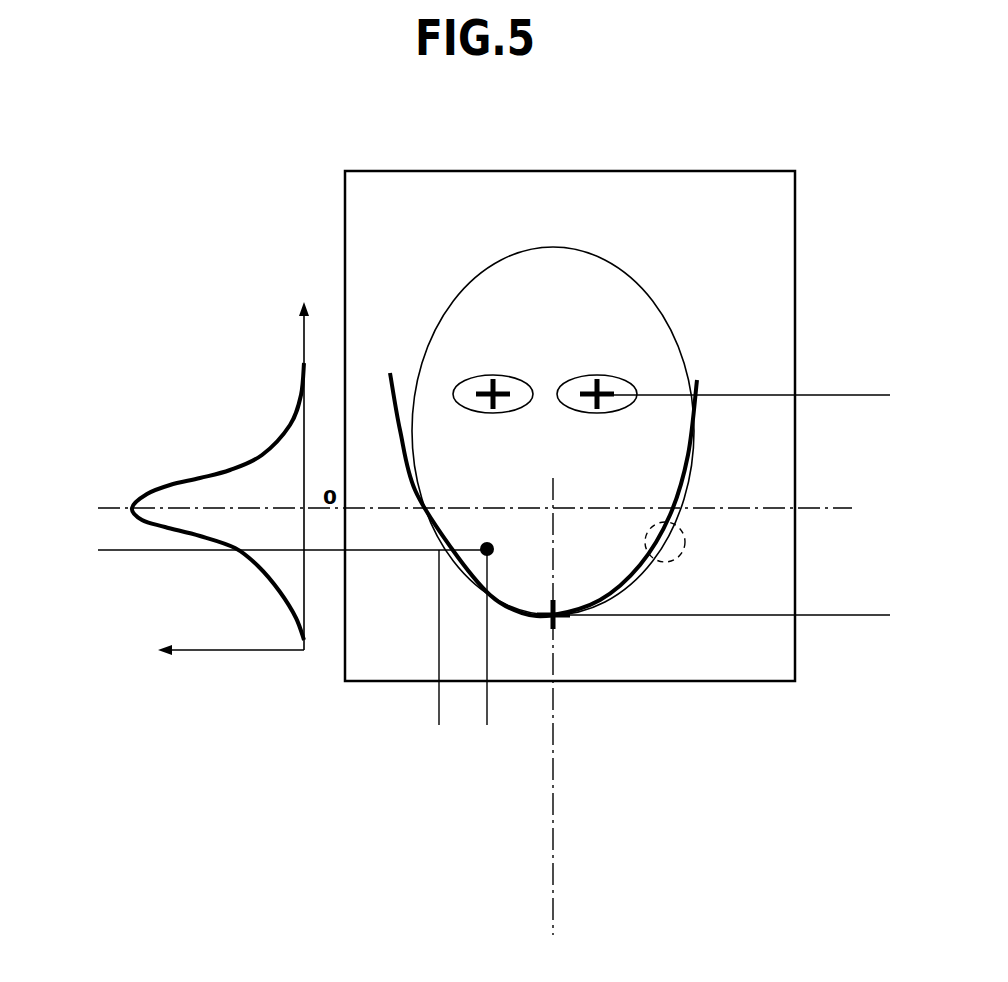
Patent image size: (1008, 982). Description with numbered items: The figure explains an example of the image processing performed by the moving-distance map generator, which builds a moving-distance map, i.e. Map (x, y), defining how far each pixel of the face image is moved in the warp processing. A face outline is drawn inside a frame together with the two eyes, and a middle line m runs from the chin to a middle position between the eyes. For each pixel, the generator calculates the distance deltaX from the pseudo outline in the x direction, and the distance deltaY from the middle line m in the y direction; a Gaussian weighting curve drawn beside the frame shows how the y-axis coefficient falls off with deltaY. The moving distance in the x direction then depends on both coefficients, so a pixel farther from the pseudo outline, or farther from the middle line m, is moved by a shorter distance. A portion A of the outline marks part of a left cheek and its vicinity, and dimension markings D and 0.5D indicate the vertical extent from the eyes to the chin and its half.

The distance from middle line in y direction deltaY is at (110, 508).
The distance from pseudo outline in x direction deltaX is at (487, 719).
The middle line m is at (722, 507).
The portion of the pseudo outline A is at (683, 548).
The moving-distance map Map is at (487, 549).
The half eye-to-chin distance 0.5D is at (812, 395).
The eye-to-chin distance D is at (880, 395).